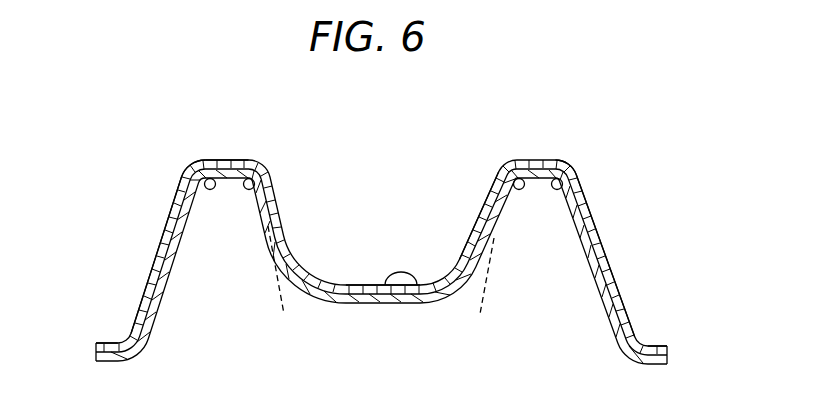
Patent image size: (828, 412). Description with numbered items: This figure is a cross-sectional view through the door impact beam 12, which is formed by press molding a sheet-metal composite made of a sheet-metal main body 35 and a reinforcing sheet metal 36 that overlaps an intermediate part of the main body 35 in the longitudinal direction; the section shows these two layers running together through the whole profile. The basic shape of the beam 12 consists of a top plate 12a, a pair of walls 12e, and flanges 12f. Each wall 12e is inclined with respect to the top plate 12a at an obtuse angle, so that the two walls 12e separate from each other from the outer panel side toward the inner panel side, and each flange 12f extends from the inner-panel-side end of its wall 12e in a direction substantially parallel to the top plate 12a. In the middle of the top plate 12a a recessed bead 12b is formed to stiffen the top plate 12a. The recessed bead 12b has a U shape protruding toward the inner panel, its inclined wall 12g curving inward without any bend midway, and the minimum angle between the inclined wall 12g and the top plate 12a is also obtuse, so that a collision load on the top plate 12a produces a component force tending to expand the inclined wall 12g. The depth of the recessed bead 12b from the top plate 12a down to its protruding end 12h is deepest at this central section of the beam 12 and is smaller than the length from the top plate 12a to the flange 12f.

The door impact beam 12 is at (130, 158).
The top plate 12a is at (229, 160).
The recessed bead 12b is at (350, 183).
The wall 12e is at (168, 222).
The flange 12f is at (105, 342).
The inclined wall 12g is at (473, 227).
The protruding end 12h is at (420, 287).
The sheet-metal main body 35 is at (162, 312).
The reinforcing sheet metal 36 is at (152, 270).